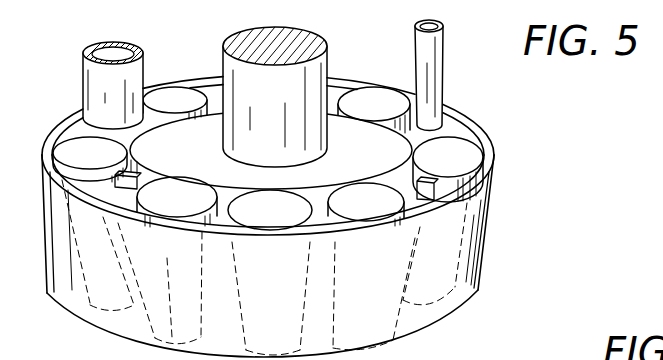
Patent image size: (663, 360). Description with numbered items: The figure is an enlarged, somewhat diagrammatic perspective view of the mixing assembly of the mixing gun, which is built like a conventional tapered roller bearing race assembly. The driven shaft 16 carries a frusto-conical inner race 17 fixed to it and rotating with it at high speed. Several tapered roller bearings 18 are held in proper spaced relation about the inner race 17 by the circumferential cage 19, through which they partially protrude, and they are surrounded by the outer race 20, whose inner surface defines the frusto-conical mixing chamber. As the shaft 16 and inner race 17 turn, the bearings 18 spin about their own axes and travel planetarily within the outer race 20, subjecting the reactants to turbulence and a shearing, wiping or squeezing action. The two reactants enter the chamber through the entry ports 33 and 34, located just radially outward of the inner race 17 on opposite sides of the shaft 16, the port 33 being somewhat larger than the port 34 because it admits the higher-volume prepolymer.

The driven shaft 16 is at (284, 99).
The inner race 17 is at (201, 158).
The tapered roller bearings 18 is at (97, 169).
The circumferential cage 19 is at (412, 188).
The outer race 20 is at (481, 228).
The mixing chamber entry port 33 is at (95, 72).
The mixing chamber entry port 34 is at (424, 50).